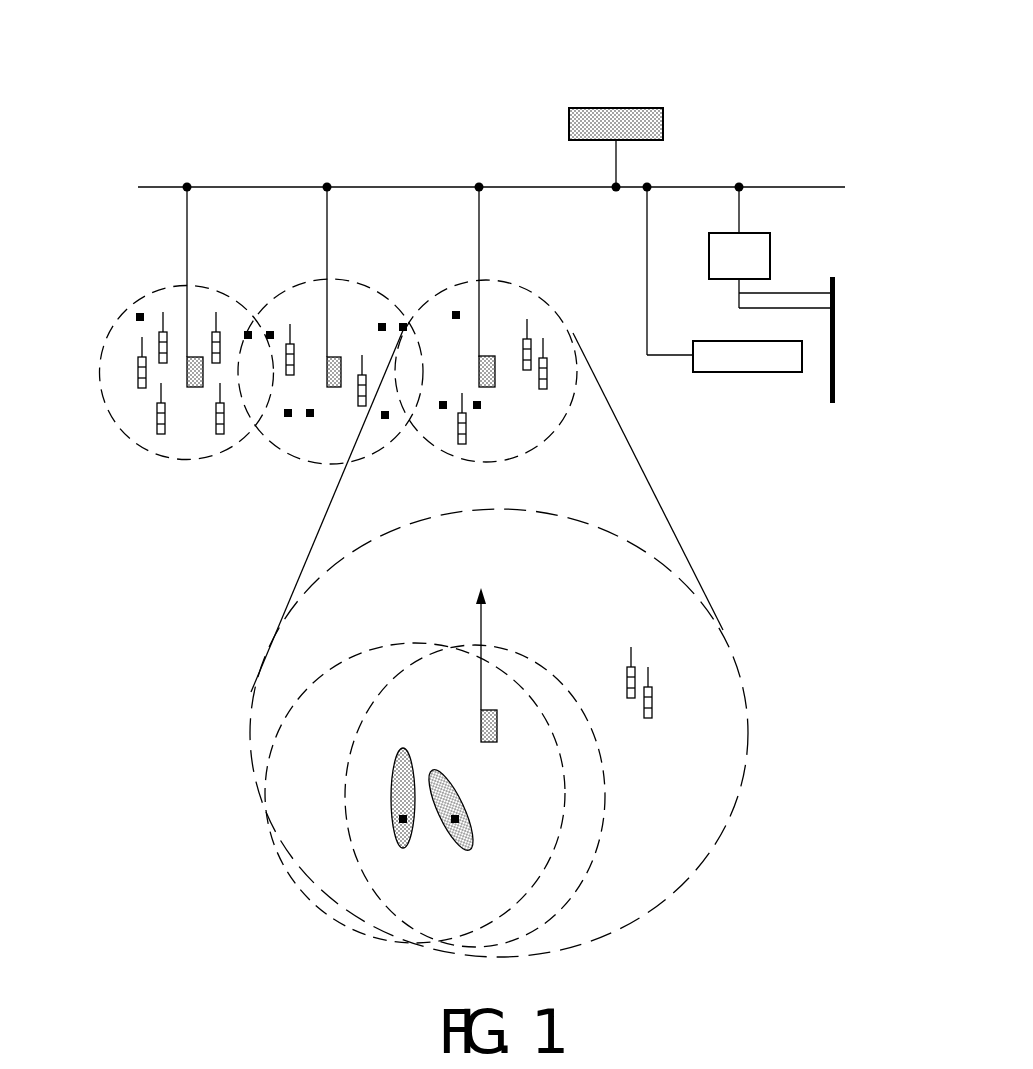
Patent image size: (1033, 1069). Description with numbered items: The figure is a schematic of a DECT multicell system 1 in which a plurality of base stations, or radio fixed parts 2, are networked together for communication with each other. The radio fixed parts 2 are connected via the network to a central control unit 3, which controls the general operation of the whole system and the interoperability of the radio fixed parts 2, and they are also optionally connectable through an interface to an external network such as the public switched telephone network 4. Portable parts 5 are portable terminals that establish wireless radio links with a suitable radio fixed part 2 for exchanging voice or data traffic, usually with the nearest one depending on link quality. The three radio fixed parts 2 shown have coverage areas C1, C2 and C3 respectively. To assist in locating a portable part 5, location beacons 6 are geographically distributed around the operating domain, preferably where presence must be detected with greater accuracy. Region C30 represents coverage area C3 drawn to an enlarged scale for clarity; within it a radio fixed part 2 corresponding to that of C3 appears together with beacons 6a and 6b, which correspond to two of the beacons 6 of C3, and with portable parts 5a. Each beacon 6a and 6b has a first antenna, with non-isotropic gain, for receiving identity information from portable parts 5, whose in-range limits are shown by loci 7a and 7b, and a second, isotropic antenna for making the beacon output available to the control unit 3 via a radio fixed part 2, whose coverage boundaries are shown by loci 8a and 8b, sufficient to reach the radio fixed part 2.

The DECT multicell system 1 is at (166, 628).
The radio fixed part 2 is at (191, 397).
The central control unit 3 is at (636, 100).
The public switched telephone network 4 is at (815, 398).
The portable part 5 is at (167, 340).
The location beacon 6 is at (140, 311).
The mobile sensor unit 5a is at (632, 700).
The beacon 6a is at (405, 848).
The beacon 6b is at (464, 850).
The locus 7a is at (407, 748).
The locus 7b is at (440, 768).
The locus 8a is at (392, 643).
The locus 8b is at (533, 655).
The coverage area C1 is at (102, 407).
The coverage area C2 is at (372, 467).
The coverage area C3 is at (578, 380).
The region C30 is at (748, 762).